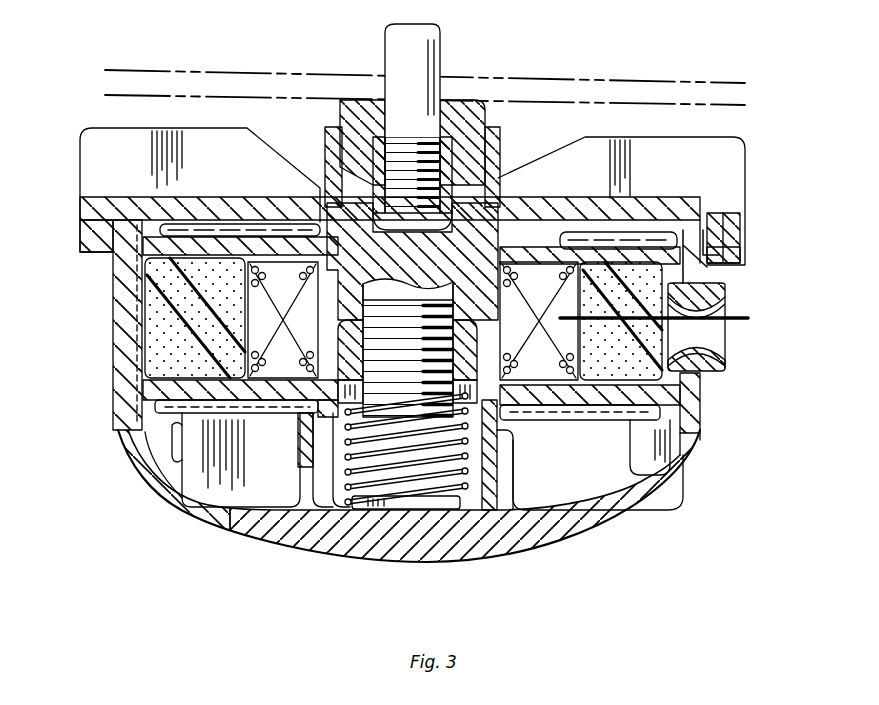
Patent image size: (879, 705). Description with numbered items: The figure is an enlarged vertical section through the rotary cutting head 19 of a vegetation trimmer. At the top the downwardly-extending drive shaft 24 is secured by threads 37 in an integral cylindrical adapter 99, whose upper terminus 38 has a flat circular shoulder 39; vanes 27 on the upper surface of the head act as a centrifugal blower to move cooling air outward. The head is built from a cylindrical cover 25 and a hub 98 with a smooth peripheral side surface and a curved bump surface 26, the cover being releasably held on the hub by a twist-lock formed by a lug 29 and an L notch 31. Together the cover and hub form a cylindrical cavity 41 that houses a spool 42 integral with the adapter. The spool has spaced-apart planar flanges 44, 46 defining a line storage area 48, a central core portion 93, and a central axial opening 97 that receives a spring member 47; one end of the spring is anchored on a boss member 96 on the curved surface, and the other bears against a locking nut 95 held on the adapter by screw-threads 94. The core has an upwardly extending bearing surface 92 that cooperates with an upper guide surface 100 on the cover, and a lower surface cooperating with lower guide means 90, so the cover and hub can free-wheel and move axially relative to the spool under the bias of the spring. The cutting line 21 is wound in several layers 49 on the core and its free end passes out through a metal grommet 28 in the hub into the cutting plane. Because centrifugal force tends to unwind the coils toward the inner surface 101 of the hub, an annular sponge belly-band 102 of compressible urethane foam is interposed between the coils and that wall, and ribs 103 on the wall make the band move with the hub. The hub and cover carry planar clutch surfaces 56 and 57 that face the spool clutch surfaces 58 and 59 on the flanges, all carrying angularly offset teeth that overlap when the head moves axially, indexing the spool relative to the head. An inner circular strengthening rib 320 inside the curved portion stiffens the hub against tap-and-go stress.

The head 19 is at (109, 469).
The cutting line 21 is at (746, 312).
The drive shaft 24 is at (443, 42).
The cover 25 is at (78, 212).
The curved bump surface 26 is at (252, 548).
The vanes 27 is at (746, 170).
The grommet 28 is at (706, 370).
The lug 29 is at (745, 235).
The L notch 31 is at (745, 262).
The threads 37 is at (405, 148).
The upper terminus 38 is at (345, 100).
The flat circular shoulder 39 is at (325, 182).
The cavity 41 is at (172, 510).
The spool 42 is at (524, 412).
The flange 44 is at (602, 418).
The flange 46 is at (560, 247).
The spring member 47 is at (312, 486).
The line storage area 48 is at (282, 352).
The layers of line 49 is at (525, 405).
The clutch surface 56 is at (197, 515).
The clutch surface 57 is at (162, 200).
The clutch surface 58 is at (632, 245).
The clutch surface 59 is at (585, 430).
The lower guide means 90 is at (514, 486).
The upwardly extending bearing surface 92 is at (490, 193).
The core portion 93 is at (310, 255).
The screw-threads 94 is at (390, 335).
The locking nut 95 is at (533, 365).
The boss member 96 is at (432, 508).
The central axial opening 97 is at (472, 462).
The hub 98 is at (113, 348).
The adapter 99 is at (468, 118).
The upper guide surface 100 is at (512, 180).
The inner surface of hub 101 is at (702, 425).
The sponge belly-band 102 is at (158, 300).
The ribs 103 is at (138, 418).
The strengthening rib 320 is at (170, 430).